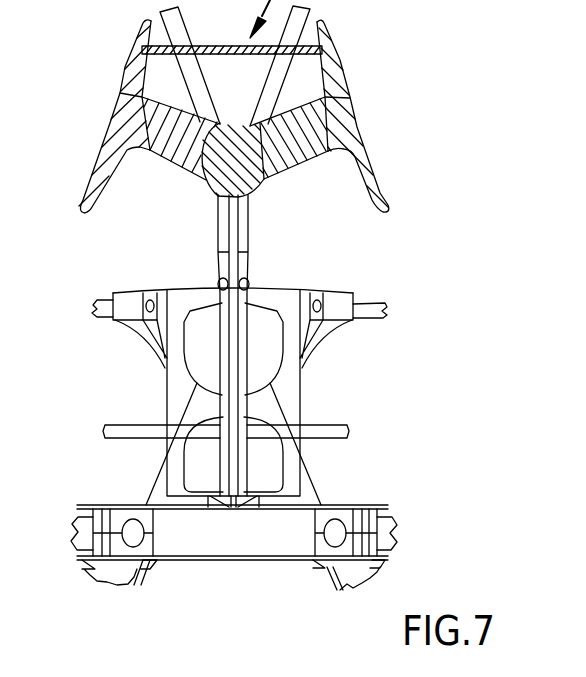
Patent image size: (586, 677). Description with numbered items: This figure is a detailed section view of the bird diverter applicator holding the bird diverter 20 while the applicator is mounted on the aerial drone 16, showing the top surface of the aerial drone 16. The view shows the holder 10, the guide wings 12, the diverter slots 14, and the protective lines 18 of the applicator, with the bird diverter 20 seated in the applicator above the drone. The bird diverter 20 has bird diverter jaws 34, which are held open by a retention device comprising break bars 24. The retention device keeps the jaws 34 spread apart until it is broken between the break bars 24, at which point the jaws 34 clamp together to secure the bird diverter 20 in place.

The holder 10 is at (283, 403).
The guide wings 12 is at (182, 34).
The diverter slots 14 is at (222, 280).
The aerial drone 16 is at (353, 507).
The protective lines 18 is at (103, 318).
The bird diverter 20 is at (301, 165).
The break bars 24 is at (160, 54).
The bird diverter jaws 34 is at (120, 112).